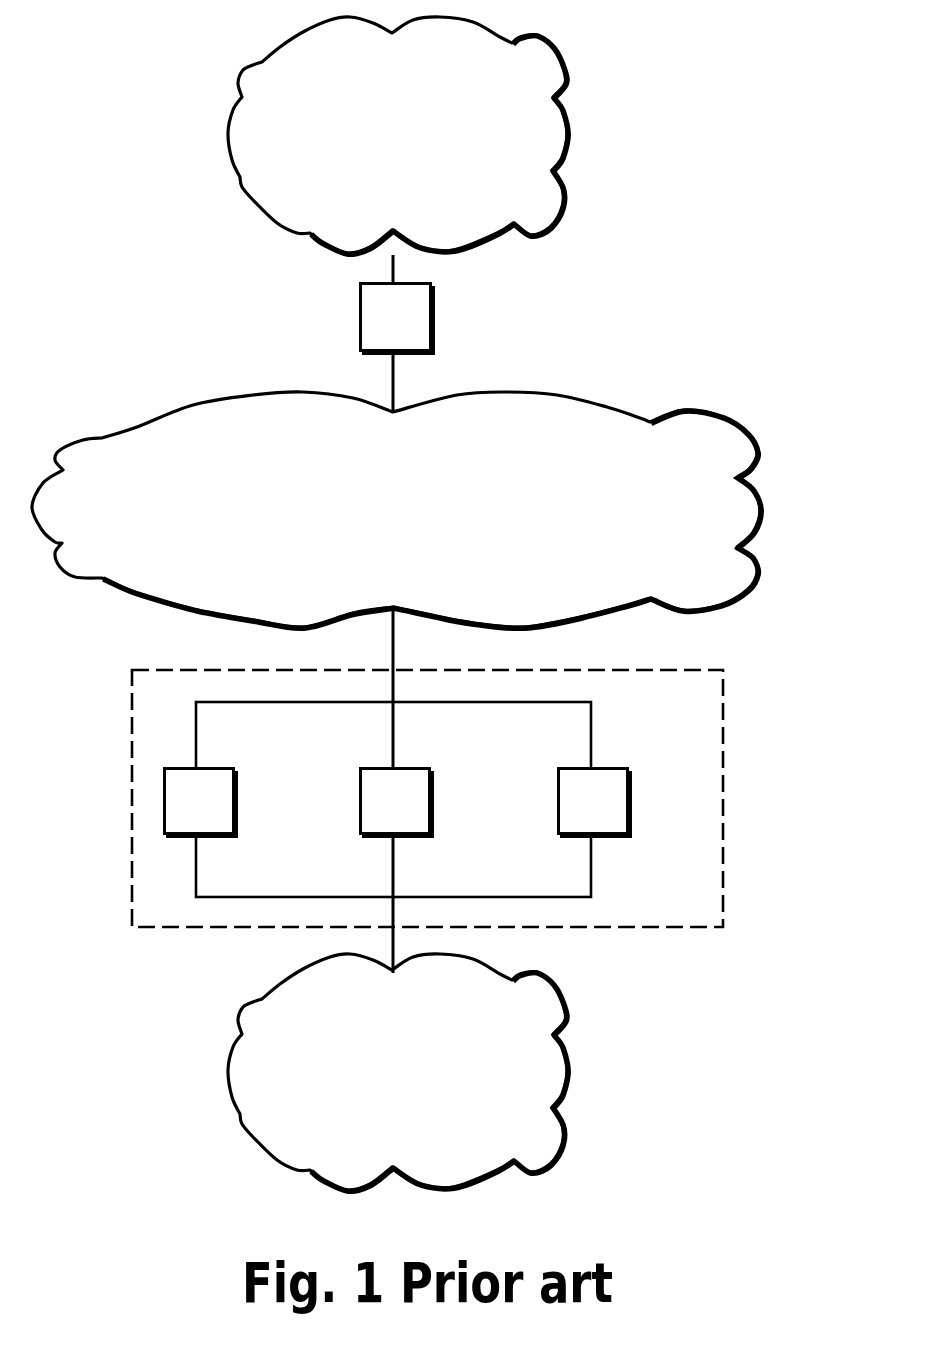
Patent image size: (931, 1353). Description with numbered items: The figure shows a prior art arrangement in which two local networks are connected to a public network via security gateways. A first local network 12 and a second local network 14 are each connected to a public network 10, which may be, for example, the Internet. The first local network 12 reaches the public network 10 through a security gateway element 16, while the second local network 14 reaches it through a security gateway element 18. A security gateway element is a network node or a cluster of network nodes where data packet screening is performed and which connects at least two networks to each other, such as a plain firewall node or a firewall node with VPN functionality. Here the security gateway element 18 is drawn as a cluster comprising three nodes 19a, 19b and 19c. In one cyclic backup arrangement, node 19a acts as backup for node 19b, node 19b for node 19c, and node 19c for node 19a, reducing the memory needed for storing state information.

The public network 10 is at (750, 432).
The first local network 12 is at (561, 62).
The second local network 14 is at (428, 1073).
The security gateway element 16 is at (433, 312).
The security gateway element 18 is at (722, 735).
The node 19a is at (236, 788).
The node 19b is at (432, 788).
The node 19c is at (629, 788).